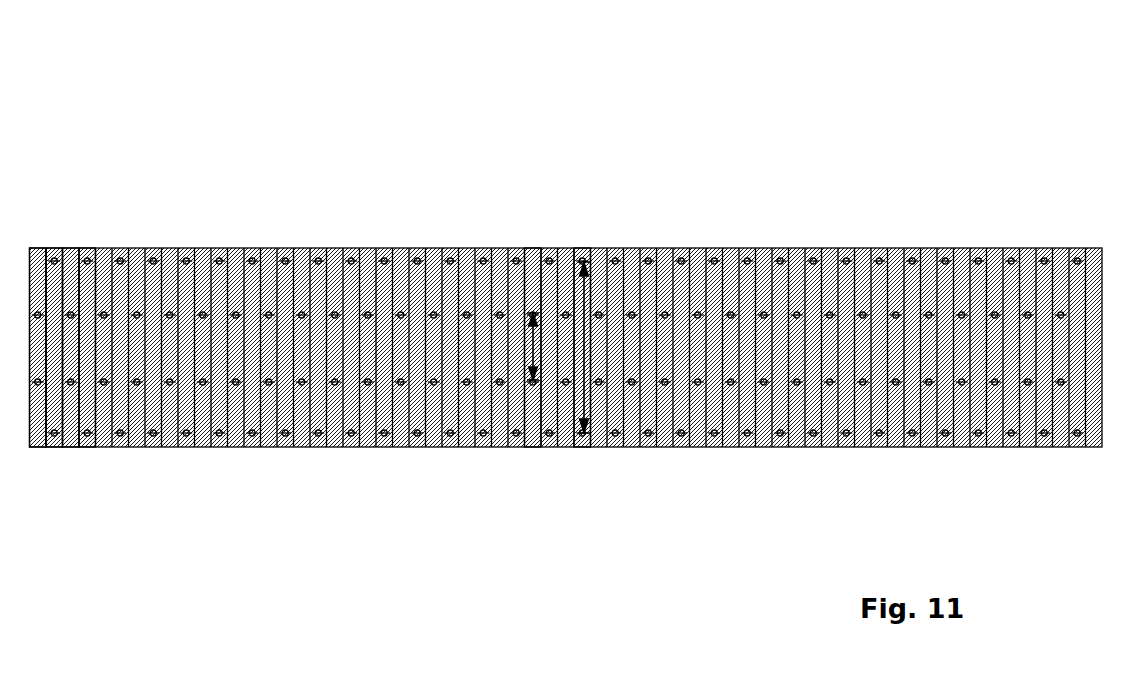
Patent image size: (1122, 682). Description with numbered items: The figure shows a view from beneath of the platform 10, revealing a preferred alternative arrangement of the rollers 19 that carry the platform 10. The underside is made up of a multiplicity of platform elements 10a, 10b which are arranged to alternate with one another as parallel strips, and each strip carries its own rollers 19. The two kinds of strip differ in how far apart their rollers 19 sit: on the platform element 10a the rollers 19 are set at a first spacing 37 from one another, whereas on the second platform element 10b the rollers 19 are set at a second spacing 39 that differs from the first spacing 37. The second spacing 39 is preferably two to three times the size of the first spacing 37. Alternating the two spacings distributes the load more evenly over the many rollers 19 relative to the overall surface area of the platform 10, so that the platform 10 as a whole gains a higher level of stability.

The platform 10 is at (566, 231).
The platform element 10a is at (34, 257).
The second platform element 10b is at (90, 438).
The rollers 19 is at (285, 260).
The first spacing 37 is at (533, 345).
The second spacing 39 is at (585, 307).